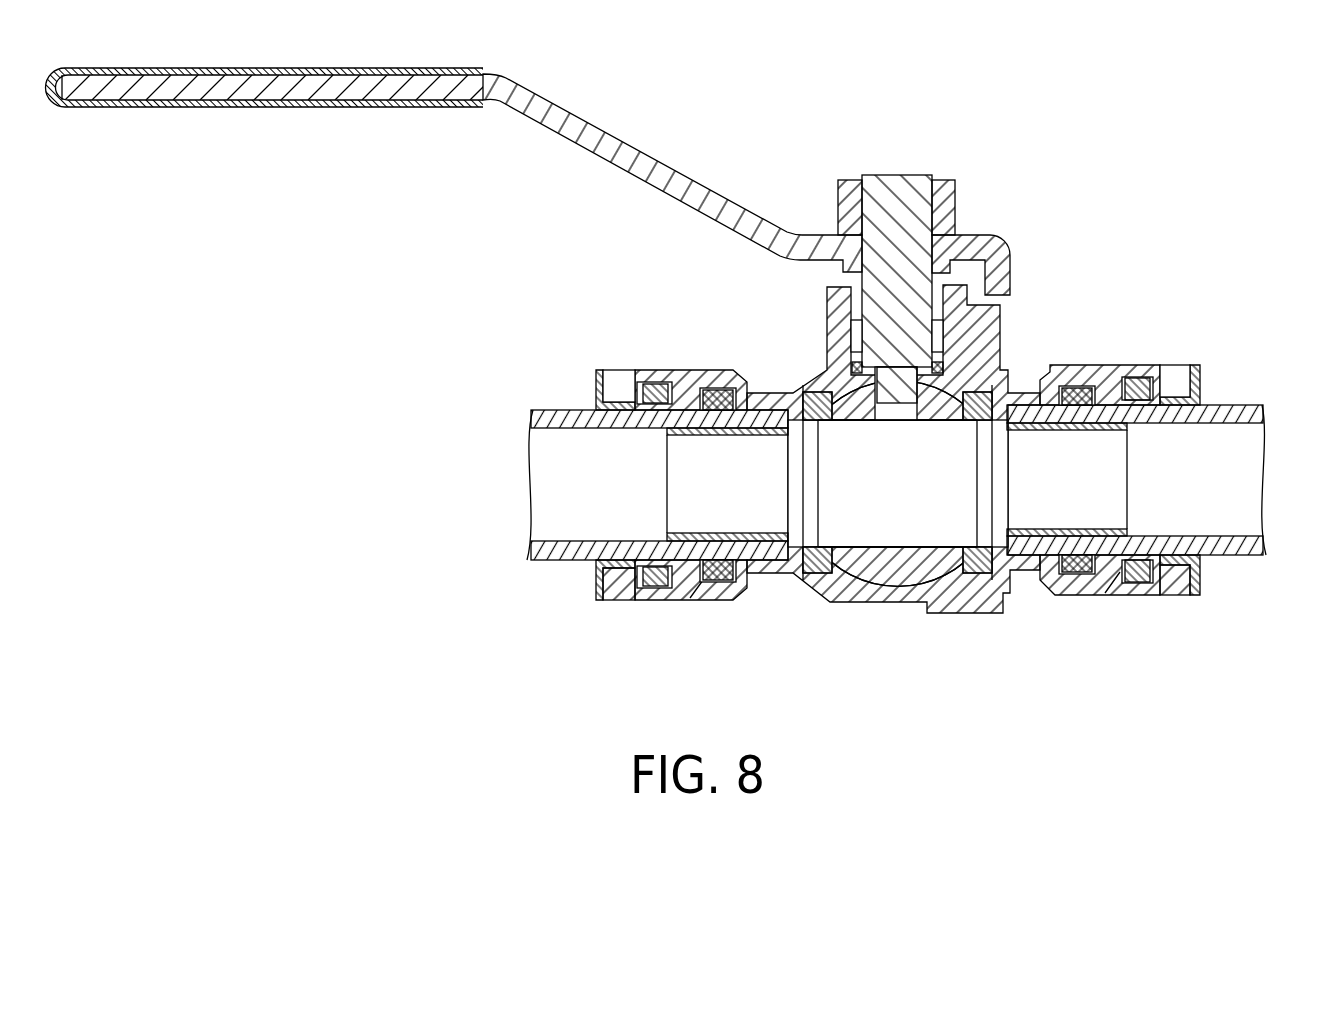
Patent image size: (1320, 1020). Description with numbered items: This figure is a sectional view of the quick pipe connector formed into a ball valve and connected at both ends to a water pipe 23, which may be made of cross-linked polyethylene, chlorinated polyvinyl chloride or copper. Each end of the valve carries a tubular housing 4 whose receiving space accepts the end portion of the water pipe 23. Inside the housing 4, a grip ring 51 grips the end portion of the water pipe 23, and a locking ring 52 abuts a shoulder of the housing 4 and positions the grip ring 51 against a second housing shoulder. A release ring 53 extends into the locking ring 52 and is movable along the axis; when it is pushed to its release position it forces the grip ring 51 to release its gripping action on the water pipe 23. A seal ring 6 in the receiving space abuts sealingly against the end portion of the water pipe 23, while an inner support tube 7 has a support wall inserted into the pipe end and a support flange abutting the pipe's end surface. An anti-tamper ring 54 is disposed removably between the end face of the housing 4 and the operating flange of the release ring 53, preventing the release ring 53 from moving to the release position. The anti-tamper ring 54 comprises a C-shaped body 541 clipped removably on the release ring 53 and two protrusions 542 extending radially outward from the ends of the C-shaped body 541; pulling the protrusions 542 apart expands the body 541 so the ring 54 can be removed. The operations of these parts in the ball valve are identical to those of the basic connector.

The tubular housing 4 is at (713, 370).
The seal ring 6 is at (1080, 388).
The inner support tube 7 is at (780, 410).
The water pipe 23 is at (545, 408).
The grip ring 51 is at (690, 600).
The locking ring 52 is at (653, 382).
The release ring 53 is at (600, 368).
The anti-tamper ring 54 is at (612, 603).
The C-shaped body 541 is at (1200, 575).
The protrusions 542 is at (1172, 368).